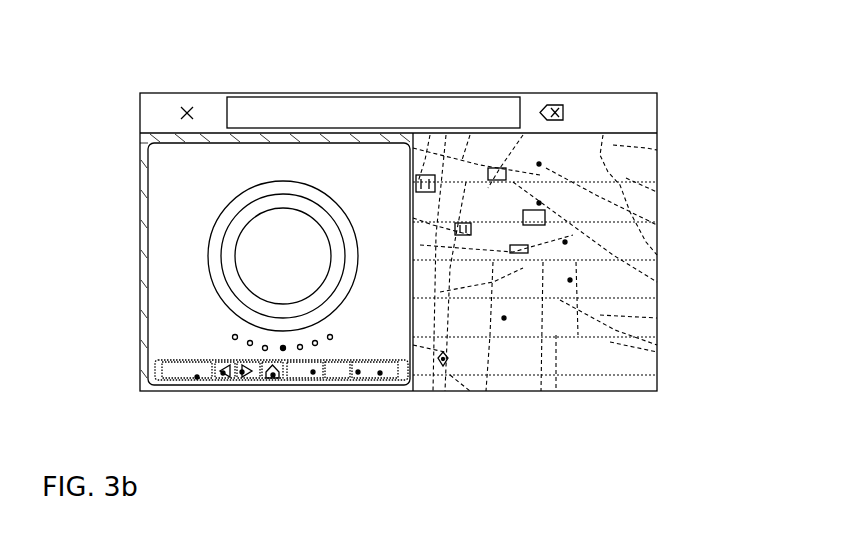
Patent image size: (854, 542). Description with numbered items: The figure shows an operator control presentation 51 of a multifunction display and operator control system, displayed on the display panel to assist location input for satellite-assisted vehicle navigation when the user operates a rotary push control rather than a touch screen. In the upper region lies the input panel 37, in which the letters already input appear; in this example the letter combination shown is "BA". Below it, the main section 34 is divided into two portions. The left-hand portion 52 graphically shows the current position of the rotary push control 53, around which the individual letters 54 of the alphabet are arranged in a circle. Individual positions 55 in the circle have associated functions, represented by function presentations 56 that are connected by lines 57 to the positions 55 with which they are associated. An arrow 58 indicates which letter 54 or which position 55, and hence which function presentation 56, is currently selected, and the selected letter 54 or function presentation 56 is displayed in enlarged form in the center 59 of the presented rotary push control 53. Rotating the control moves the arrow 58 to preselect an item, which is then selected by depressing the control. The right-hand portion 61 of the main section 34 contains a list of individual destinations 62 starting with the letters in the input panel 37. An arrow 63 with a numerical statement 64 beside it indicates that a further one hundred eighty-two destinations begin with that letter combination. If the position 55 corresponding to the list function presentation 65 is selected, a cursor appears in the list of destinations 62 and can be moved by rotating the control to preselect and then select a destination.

The operator control presentation 51 is at (116, 73).
The input panel 37 is at (324, 110).
The main section 34 is at (88, 135).
The left-hand portion 52 is at (140, 432).
The rotary push control 53 is at (230, 198).
The center 59 is at (263, 245).
The arrow 58 is at (200, 238).
The letters 54 is at (202, 318).
The lines 57 is at (260, 354).
The function presentations 56 is at (273, 375).
The positions 55 is at (283, 348).
The list function presentation 65 is at (380, 373).
The right-hand portion 61 is at (415, 432).
The destinations 62 is at (503, 148).
The arrow 63 is at (443, 368).
The numerical statement 64 is at (478, 364).